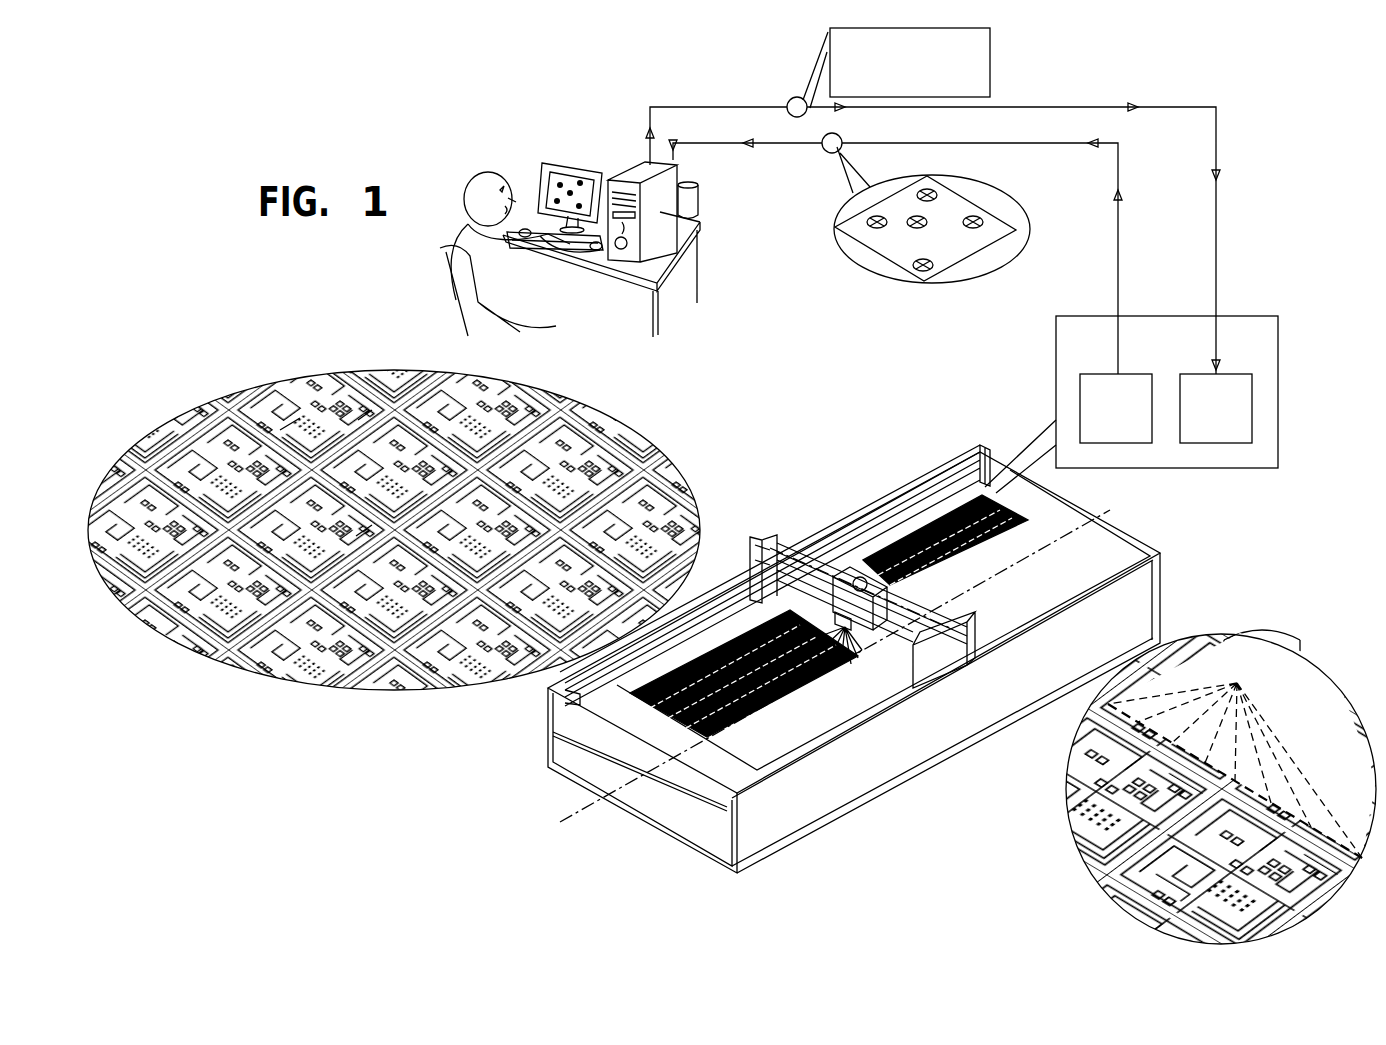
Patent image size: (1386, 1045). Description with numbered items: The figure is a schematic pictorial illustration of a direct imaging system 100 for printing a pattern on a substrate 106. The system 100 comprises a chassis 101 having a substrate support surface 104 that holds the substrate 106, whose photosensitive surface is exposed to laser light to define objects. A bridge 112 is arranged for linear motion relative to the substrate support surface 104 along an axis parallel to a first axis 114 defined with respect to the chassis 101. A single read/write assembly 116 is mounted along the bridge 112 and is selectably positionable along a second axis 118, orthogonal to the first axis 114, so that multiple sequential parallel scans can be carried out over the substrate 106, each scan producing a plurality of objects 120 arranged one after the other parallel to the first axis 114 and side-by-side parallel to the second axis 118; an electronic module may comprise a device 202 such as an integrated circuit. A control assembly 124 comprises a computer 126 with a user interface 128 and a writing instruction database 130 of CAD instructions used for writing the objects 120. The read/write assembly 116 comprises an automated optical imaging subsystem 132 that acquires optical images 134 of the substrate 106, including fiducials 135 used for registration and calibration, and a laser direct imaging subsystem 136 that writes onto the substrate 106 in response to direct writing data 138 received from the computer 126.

The direct imaging system 100 is at (1257, 137).
The chassis 101 is at (902, 768).
The substrate support surface 104 is at (720, 808).
The substrate 106 is at (795, 740).
The bridge 112 is at (940, 632).
The first axis 114 is at (594, 812).
The read/write assembly 116 is at (1252, 318).
The second axis 118 is at (990, 662).
The objects 120 is at (230, 407).
The control assembly 124 is at (555, 115).
The computer 126 is at (640, 176).
The user interface 128 is at (555, 185).
The writing instruction database 130 is at (700, 196).
The automated optical imaging subsystem 132 is at (1088, 374).
The optical images 134 is at (890, 248).
The fiducials 135 is at (978, 218).
The laser direct imaging subsystem 136 is at (1240, 374).
The direct writing data 138 is at (990, 58).
The device 202 is at (363, 533).